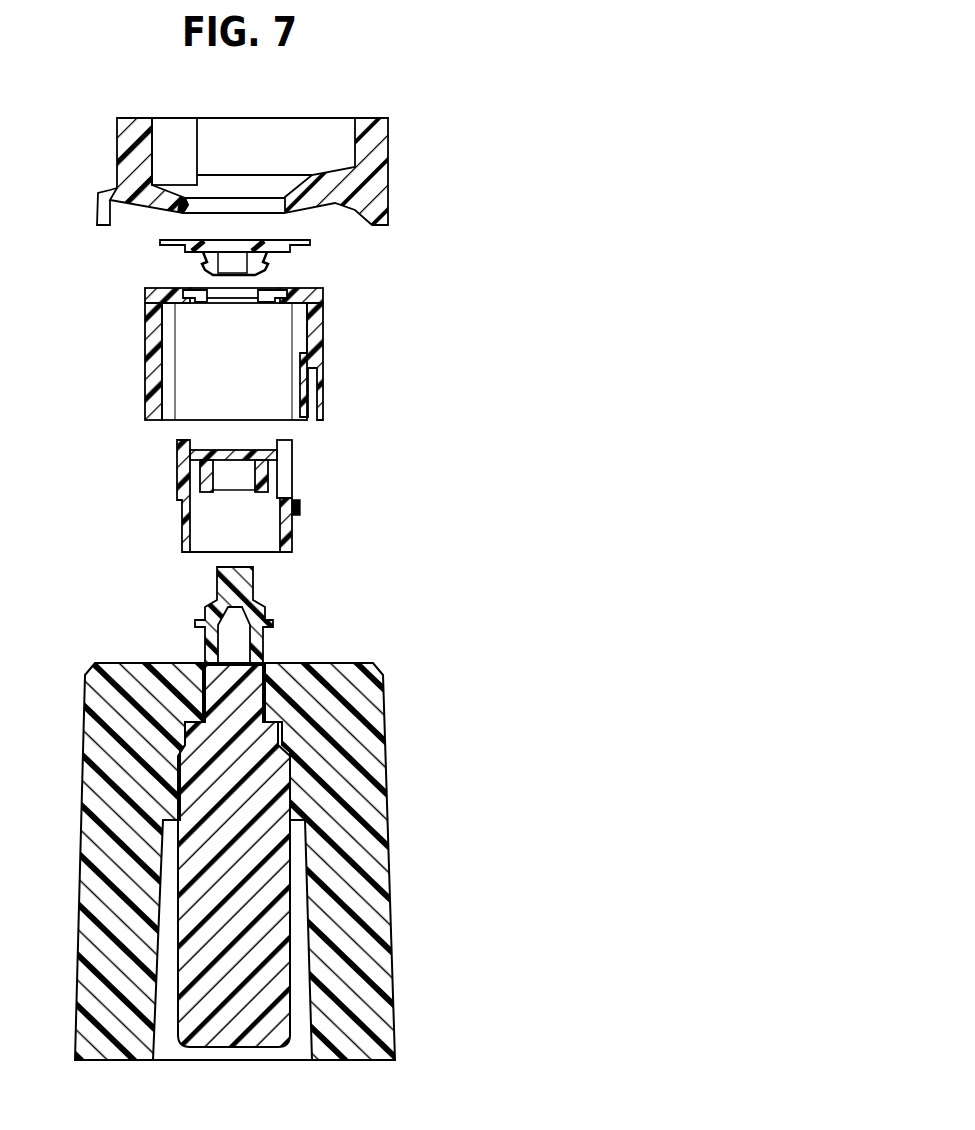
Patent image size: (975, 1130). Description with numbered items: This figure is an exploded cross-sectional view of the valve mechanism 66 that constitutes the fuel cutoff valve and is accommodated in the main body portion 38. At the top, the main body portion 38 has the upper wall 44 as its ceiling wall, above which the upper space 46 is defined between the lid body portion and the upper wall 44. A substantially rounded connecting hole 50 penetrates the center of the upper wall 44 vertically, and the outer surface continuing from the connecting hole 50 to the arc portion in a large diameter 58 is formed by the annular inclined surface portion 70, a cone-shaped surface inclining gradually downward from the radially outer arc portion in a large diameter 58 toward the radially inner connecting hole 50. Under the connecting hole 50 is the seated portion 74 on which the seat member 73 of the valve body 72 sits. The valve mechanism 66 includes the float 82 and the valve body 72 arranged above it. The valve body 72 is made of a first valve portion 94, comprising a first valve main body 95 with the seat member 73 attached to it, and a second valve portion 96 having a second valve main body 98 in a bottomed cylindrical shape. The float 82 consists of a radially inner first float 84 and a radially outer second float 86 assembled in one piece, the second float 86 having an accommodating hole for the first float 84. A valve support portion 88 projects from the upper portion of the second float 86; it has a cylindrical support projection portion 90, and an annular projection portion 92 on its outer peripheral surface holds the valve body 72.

The main body portion 38 is at (400, 172).
The upper wall 44 is at (248, 190).
The upper space 46 is at (296, 163).
The connecting hole 50 is at (188, 210).
The arc portion in a large diameter 58 is at (381, 131).
The valve mechanism 66 is at (552, 243).
The annular inclined surface portion 70 is at (118, 188).
The valve body 72 is at (422, 430).
The seat member 73 is at (308, 243).
The seated portion 74 is at (290, 212).
The float 82 is at (464, 674).
The first float 84 is at (272, 745).
The second float 86 is at (385, 775).
The valve support portion 88 is at (205, 650).
The support projection portion 90 is at (253, 585).
The annular projection portion 92 is at (273, 624).
The first valve portion 94 is at (340, 367).
The first valve main body 95 is at (145, 372).
The second valve portion 96 is at (315, 487).
The second valve main body 98 is at (177, 490).